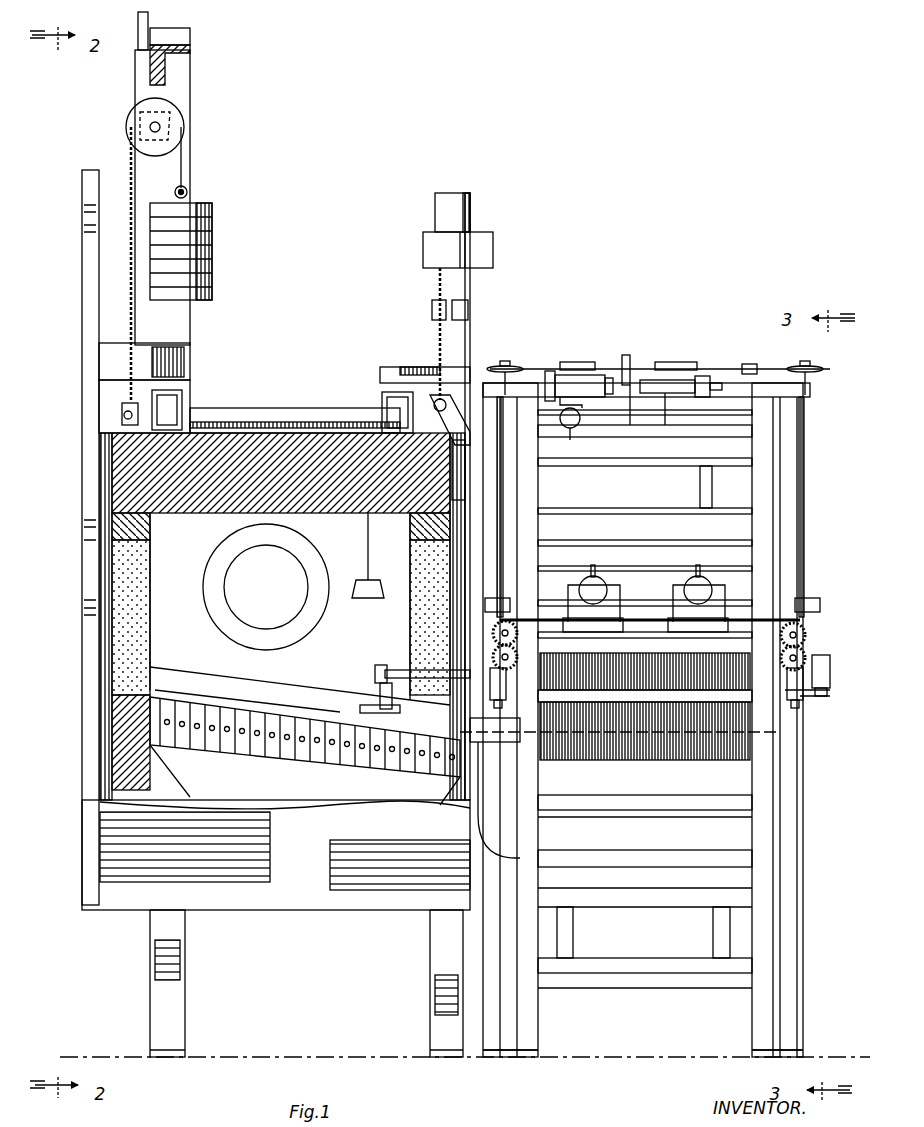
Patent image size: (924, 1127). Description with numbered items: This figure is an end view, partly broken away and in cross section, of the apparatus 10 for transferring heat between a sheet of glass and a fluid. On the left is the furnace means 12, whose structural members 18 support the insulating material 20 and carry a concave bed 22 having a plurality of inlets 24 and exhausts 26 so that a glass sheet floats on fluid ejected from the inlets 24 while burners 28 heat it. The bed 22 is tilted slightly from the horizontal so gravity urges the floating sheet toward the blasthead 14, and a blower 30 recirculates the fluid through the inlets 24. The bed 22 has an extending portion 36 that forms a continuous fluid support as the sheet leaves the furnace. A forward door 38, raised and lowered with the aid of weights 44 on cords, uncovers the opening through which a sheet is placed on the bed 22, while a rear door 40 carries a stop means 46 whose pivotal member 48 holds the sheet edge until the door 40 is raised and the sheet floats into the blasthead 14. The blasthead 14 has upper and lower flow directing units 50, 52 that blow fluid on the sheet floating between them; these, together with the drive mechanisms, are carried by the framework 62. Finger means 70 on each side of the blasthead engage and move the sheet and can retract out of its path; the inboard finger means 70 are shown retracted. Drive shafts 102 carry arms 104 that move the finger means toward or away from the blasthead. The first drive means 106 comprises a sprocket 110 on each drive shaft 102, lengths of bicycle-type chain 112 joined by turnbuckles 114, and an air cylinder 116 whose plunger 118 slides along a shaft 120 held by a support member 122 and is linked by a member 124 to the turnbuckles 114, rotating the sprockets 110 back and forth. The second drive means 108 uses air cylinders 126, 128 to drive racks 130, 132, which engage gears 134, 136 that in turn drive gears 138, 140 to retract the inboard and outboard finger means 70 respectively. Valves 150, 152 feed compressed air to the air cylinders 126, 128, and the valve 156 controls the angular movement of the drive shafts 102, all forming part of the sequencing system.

The apparatus 10 is at (490, 125).
The furnace means 12 is at (264, 534).
The blasthead 14 is at (637, 633).
The structural members 18 is at (160, 1012).
The insulating material 20 is at (120, 487).
The bed 22 is at (305, 713).
The inlets 24 is at (232, 752).
The exhausts 26 is at (312, 710).
The burners 28 is at (355, 585).
The blowers 30 is at (205, 595).
The extending portion 36 is at (505, 742).
The forward door 38 is at (88, 634).
The rear door 40 is at (465, 490).
The weights 44 is at (212, 250).
The stop means 46 is at (393, 672).
The pivotal member 48 is at (368, 707).
The upper flow directing unit 50 is at (565, 676).
The lower flow directing unit 52 is at (640, 750).
The framework 62 is at (530, 1018).
The finger means 70 is at (490, 620).
The drive shafts 102 is at (490, 512).
The arm 104 is at (808, 695).
The first drive means 106 is at (675, 402).
The second drive means 108 is at (670, 530).
The sprocket 110 is at (505, 364).
The bicycle-type chain 112 is at (760, 366).
The turnbuckles 114 is at (602, 362).
The air cylinder 116 is at (560, 378).
The plunger 118 is at (630, 378).
The shaft 120 is at (664, 392).
The support member 122 is at (704, 390).
The member 124 is at (626, 362).
The air cylinder 126 is at (620, 625).
The air cylinder 128 is at (660, 622).
The rack 130 is at (530, 618).
The rack 132 is at (810, 620).
The gear 134 is at (495, 640).
The gear 136 is at (812, 635).
The gear 138 is at (495, 660).
The gear 140 is at (820, 662).
The valve 150 is at (608, 575).
The valve 152 is at (687, 573).
The valve 156 is at (580, 425).